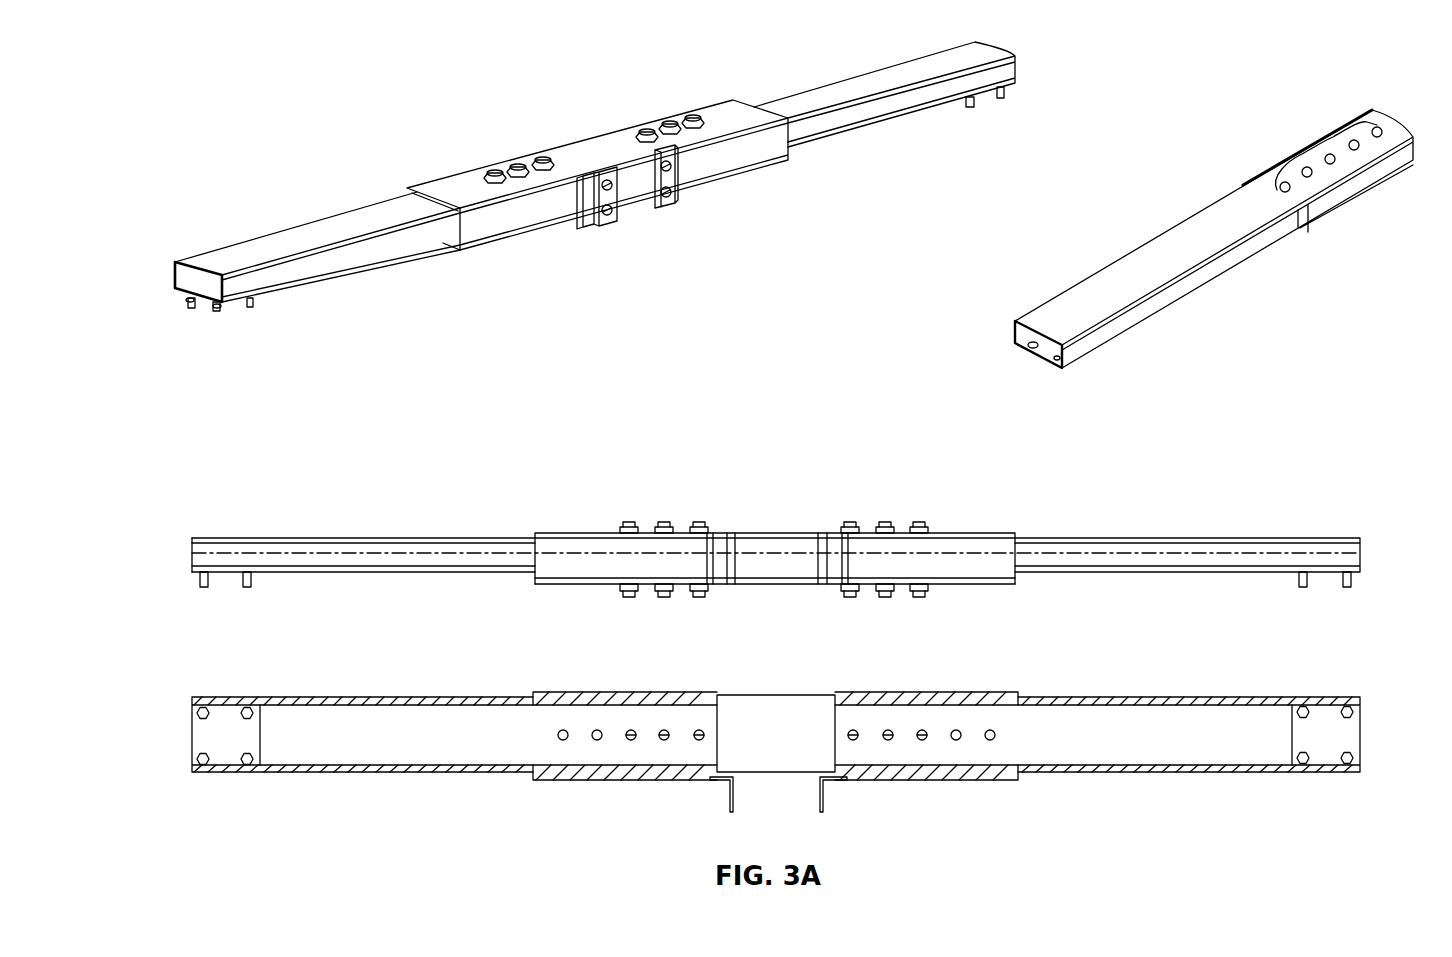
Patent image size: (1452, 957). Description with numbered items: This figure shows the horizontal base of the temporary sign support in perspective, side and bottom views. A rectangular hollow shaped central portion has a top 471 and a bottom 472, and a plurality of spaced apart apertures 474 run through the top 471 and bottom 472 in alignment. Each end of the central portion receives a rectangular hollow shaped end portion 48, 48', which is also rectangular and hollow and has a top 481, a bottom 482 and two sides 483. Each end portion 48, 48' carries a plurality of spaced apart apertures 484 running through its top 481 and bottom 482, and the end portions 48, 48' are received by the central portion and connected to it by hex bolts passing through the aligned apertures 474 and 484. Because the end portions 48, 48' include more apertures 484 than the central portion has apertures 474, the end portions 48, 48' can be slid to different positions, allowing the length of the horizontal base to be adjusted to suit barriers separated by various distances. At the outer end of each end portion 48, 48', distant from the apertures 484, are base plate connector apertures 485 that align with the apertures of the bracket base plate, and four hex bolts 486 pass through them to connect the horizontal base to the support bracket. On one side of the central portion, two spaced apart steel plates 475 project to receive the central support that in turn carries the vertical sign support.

The end portion 48 is at (767, 482).
The end portion 48' is at (1057, 403).
The top 471 is at (550, 532).
The bottom 472 is at (575, 585).
The apertures 474 is at (630, 522).
The steel plates 475 is at (733, 807).
The top 481 is at (292, 537).
The bottom 482 is at (337, 573).
The sides 483 is at (173, 272).
The apertures 484 is at (1318, 138).
The base plate connector apertures 485 is at (1056, 360).
The hex bolts 486 is at (192, 311).